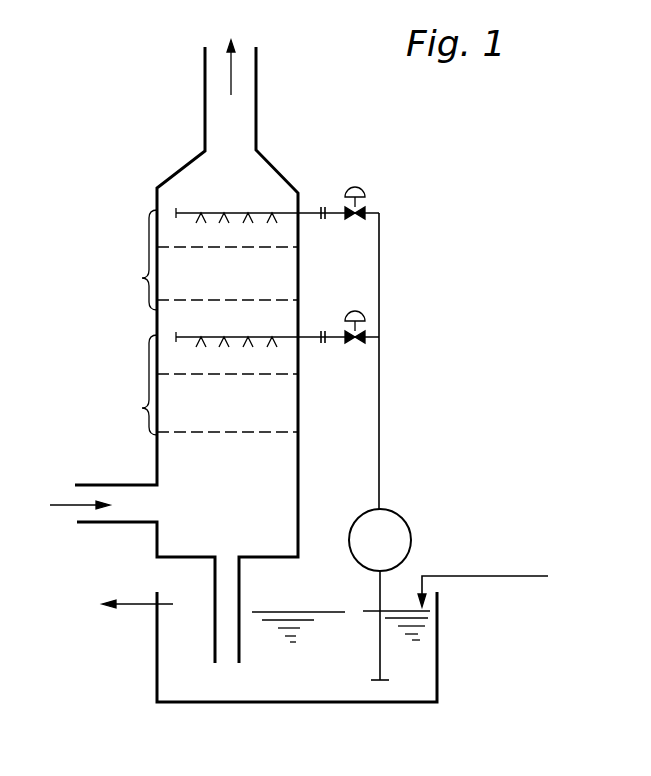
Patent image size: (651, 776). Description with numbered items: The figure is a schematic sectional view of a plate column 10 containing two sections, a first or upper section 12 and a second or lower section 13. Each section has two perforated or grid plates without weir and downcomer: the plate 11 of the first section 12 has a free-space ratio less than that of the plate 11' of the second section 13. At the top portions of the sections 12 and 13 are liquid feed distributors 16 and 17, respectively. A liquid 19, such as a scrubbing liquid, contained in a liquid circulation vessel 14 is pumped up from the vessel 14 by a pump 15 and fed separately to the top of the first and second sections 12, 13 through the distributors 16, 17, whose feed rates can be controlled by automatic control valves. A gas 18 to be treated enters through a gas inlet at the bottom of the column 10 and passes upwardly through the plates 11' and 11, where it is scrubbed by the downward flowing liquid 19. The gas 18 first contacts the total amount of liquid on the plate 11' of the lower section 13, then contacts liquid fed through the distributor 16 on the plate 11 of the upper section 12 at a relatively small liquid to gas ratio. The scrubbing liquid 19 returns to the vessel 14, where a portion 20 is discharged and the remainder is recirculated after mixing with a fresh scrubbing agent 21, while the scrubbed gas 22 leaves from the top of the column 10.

The plate column 10 is at (150, 364).
The perforated plate 11 is at (252, 273).
The perforated plate 11' is at (250, 403).
The first section 12 is at (147, 279).
The second section 13 is at (147, 409).
The liquid circulation vessel 14 is at (438, 648).
The pump 15 is at (408, 524).
The liquid feed distributor 16 is at (309, 213).
The liquid feed distributor 17 is at (309, 337).
The gas 18 is at (61, 504).
The liquid 19 is at (278, 703).
The portion of the scrubbing liquid 20 is at (129, 604).
The fresh scrubbing agent 21 is at (513, 576).
The scrubbed gas 22 is at (236, 66).